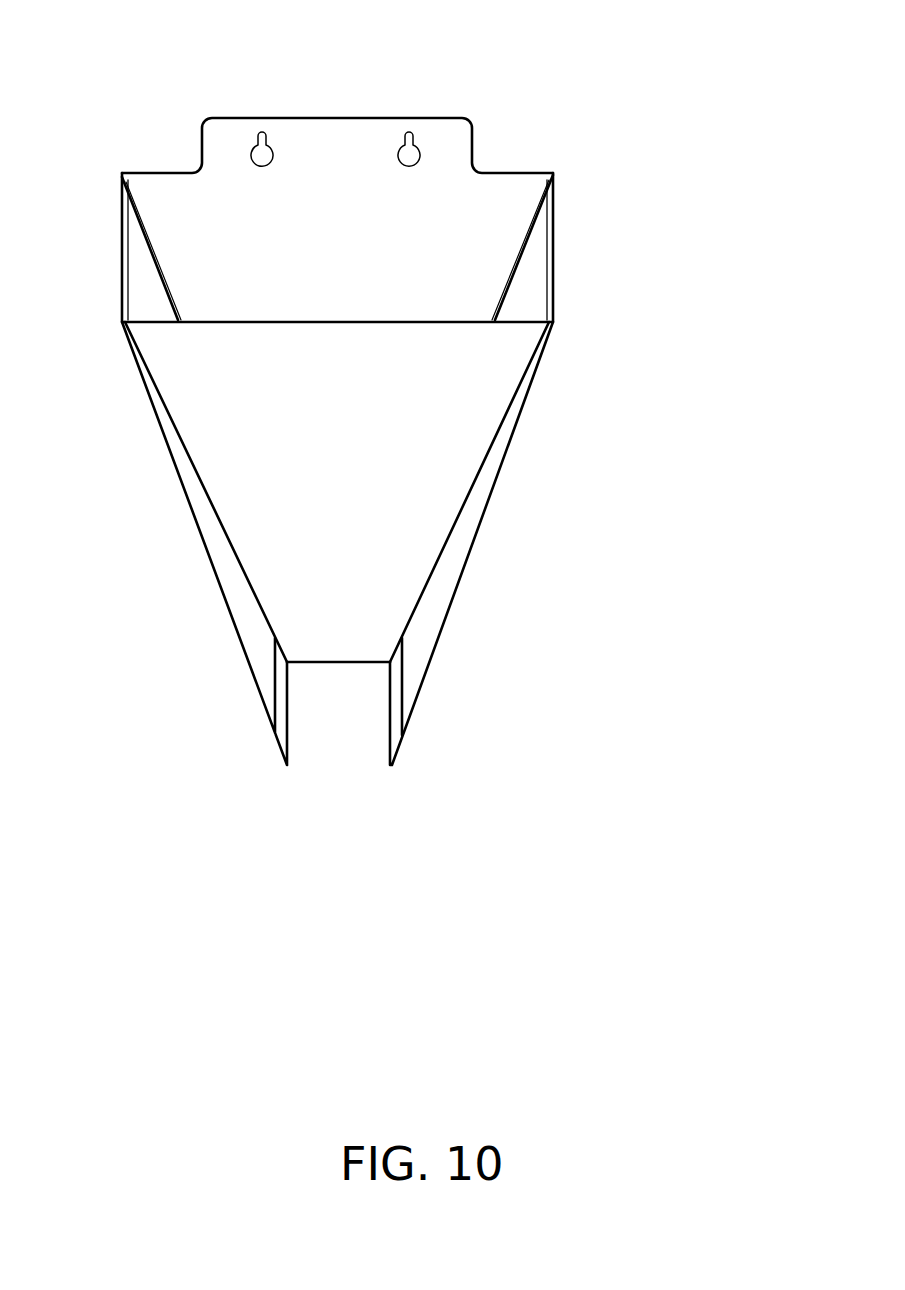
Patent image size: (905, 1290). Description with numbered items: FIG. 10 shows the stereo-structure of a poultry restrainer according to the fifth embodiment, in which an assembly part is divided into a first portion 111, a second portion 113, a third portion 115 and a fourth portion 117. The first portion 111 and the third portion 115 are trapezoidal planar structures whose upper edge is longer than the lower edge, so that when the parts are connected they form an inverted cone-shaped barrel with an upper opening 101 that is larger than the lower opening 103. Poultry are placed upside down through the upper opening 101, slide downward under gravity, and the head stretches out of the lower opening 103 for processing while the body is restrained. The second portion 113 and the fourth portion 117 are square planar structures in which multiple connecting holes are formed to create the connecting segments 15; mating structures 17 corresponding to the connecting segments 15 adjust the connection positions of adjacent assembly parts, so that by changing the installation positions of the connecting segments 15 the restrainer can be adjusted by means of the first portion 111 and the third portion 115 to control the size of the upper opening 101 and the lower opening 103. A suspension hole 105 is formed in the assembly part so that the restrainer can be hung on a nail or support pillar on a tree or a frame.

The upper opening 101 is at (422, 423).
The connecting segment 15 is at (123, 197).
The suspension hole 105 is at (422, 155).
The first portion 111 is at (458, 238).
The third portion 115 is at (432, 423).
The fourth portion 117 is at (477, 547).
The mating structure 17 is at (407, 705).
The second portion 113 is at (255, 622).
The lower opening 103 is at (339, 664).